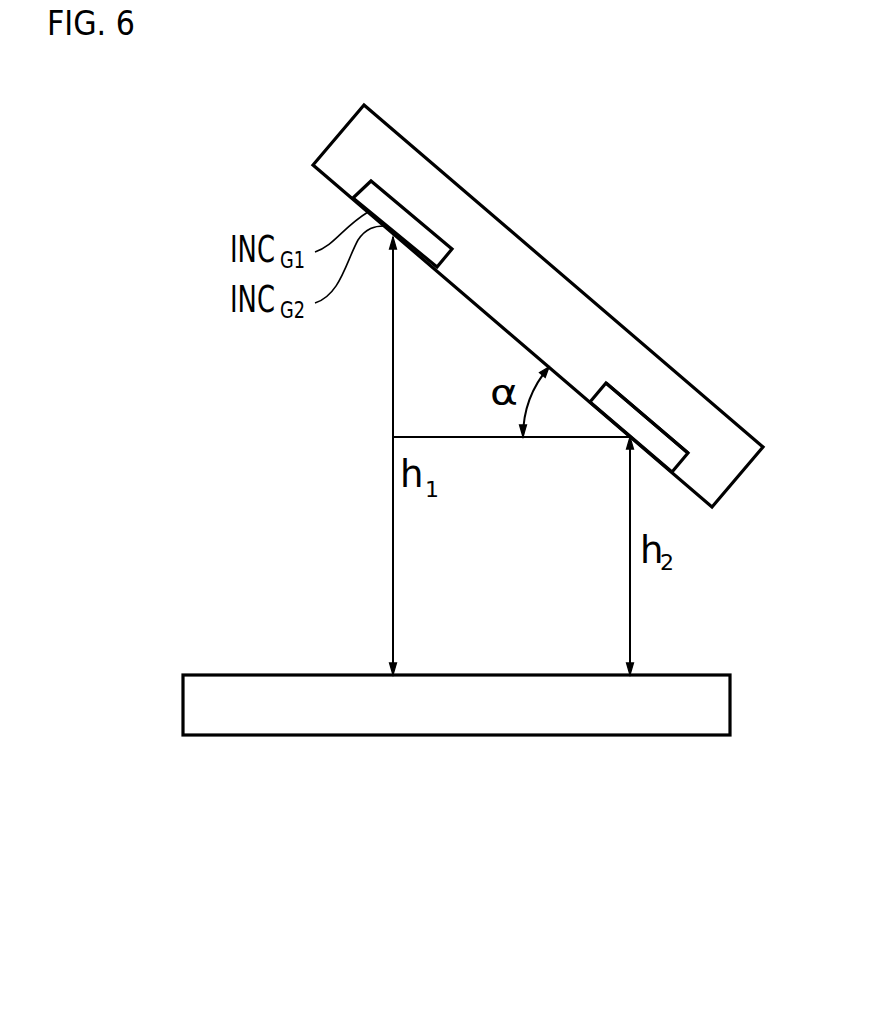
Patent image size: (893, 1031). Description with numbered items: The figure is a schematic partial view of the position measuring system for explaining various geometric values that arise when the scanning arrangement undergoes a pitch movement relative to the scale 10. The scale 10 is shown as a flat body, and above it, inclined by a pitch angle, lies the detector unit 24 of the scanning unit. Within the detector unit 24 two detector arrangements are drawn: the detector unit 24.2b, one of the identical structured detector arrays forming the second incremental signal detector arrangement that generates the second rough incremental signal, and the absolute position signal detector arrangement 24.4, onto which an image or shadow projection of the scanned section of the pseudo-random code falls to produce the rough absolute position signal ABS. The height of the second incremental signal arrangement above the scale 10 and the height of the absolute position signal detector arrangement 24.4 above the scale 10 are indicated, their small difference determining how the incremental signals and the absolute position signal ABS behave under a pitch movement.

The detector unit 24 is at (562, 268).
The detector unit of the second incremental signal detector arrangement 24.2b is at (408, 206).
The absolute position signal detector arrangement 24.4 is at (673, 438).
The absolute position signal ABS is at (650, 417).
The scale 10 is at (265, 740).